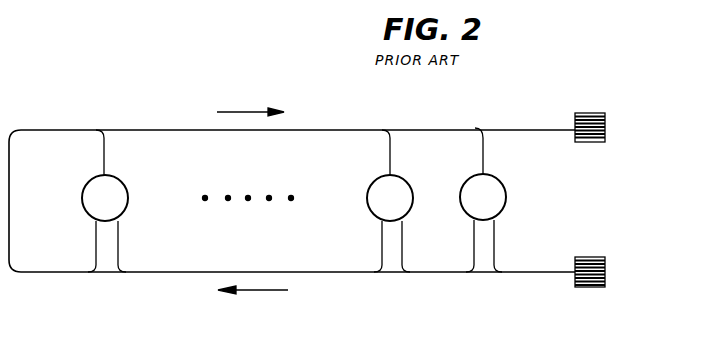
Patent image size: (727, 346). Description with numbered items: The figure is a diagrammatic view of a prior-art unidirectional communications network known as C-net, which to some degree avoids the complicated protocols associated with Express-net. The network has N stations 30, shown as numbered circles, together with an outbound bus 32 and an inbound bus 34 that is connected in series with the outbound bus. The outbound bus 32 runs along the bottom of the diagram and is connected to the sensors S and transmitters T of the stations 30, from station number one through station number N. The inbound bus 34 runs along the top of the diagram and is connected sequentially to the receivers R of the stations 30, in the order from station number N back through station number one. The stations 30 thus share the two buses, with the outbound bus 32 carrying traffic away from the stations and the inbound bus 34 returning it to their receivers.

The stations 30 is at (123, 184).
The outbound bus 32 is at (143, 273).
The inbound bus 34 is at (119, 130).